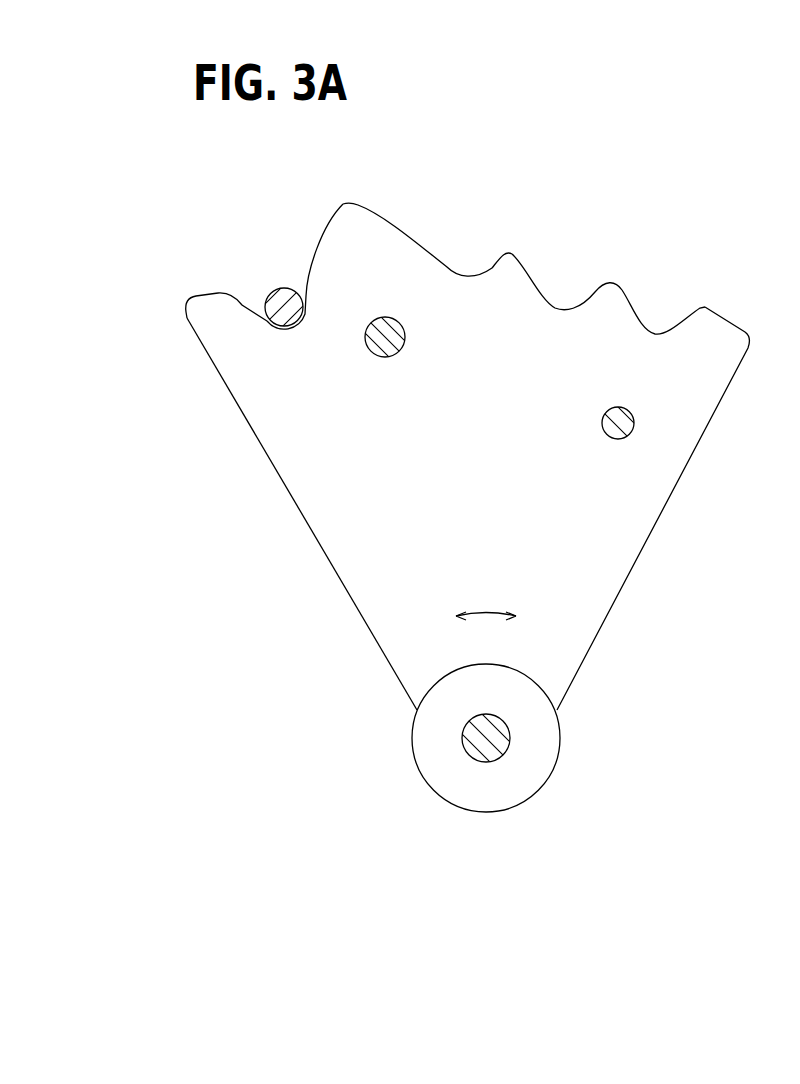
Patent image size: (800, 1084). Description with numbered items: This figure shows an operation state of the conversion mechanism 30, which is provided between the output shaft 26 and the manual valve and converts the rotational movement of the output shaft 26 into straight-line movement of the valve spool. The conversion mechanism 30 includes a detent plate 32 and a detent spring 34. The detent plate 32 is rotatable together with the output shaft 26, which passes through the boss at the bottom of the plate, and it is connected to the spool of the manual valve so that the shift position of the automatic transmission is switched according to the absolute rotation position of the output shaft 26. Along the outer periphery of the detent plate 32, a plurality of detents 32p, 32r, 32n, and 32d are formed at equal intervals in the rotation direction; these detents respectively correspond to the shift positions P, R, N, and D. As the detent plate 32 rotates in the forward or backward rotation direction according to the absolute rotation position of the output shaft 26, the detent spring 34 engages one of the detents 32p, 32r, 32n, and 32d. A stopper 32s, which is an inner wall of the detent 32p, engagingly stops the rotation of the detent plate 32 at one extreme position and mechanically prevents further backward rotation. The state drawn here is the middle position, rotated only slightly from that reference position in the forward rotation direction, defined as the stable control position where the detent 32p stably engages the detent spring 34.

The conversion mechanism 30 is at (373, 668).
The detent plate 32 is at (618, 567).
The stopper 32s is at (242, 305).
The detent 32p is at (305, 293).
The detent 32r is at (491, 263).
The detent 32n is at (590, 295).
The detent 32d is at (685, 316).
The detent spring 34 is at (268, 302).
The output shaft 26 is at (503, 738).